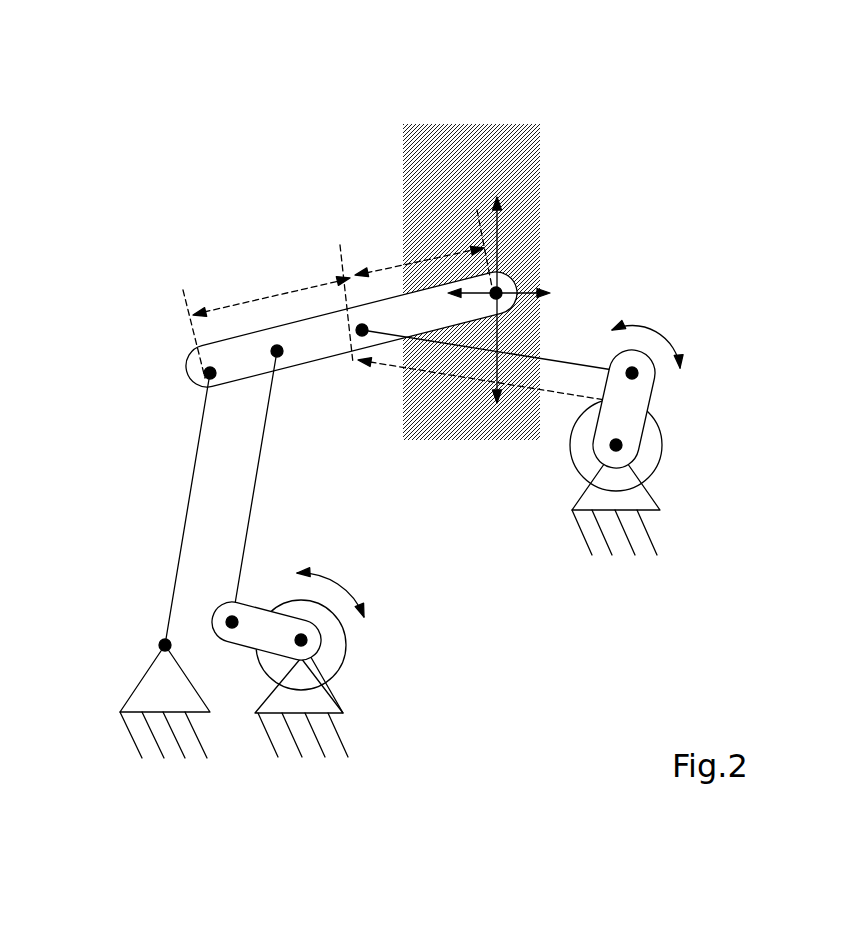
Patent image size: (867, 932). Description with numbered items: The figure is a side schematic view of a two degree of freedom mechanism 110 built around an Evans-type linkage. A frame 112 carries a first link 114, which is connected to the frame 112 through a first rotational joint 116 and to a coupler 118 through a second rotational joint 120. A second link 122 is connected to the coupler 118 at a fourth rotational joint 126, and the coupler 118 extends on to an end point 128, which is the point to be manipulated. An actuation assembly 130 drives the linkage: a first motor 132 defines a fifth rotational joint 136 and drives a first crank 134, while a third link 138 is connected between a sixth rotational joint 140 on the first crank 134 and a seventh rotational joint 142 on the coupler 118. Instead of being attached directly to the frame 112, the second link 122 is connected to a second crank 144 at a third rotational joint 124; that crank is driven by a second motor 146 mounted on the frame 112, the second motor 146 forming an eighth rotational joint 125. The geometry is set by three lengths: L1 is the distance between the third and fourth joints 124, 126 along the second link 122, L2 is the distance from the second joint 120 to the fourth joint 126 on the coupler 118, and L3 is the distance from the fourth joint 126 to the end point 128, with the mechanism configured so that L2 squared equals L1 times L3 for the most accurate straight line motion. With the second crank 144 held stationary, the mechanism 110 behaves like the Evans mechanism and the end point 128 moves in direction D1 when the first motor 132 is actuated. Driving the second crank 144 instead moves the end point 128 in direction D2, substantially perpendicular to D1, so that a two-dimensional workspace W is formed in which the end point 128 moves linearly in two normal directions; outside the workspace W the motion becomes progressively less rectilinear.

The two degree of freedom mechanism 110 is at (177, 148).
The frame 112 is at (167, 732).
The first link 114 is at (186, 512).
The first rotational joint 116 is at (163, 643).
The coupler 118 is at (323, 337).
The second rotational joint 120 is at (197, 348).
The second link 122 is at (525, 295).
The third rotational joint 124 is at (632, 373).
The eighth rotational joint 125 is at (607, 447).
The fourth rotational joint 126 is at (362, 330).
The end point 128 is at (496, 292).
The actuation assembly 130 is at (345, 671).
The first motor 132 is at (332, 652).
The first crank 134 is at (255, 642).
The fifth rotational joint 136 is at (345, 715).
The third link 138 is at (257, 460).
The sixth rotational joint 140 is at (232, 622).
The seventh rotational joint 142 is at (277, 351).
The second crank 144 is at (623, 410).
The second motor 146 is at (645, 452).
The workspace W is at (467, 145).
The first direction D1 is at (498, 227).
The second direction D2 is at (527, 288).
The distance between third and fourth joints L1 is at (494, 387).
The distance between second and fourth joints L2 is at (268, 311).
The distance between fourth joint and end point L3 is at (423, 248).